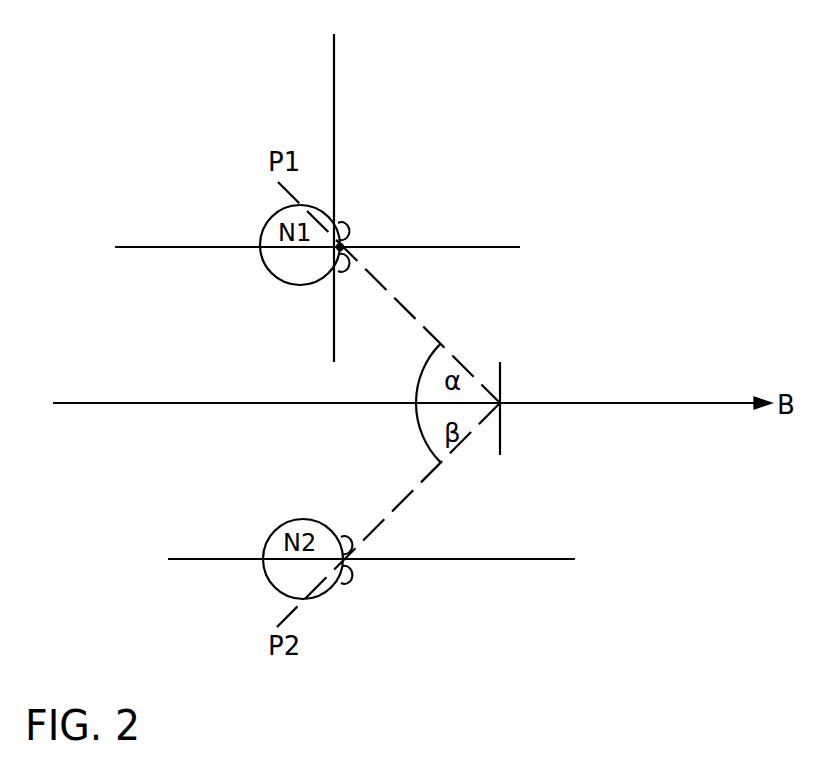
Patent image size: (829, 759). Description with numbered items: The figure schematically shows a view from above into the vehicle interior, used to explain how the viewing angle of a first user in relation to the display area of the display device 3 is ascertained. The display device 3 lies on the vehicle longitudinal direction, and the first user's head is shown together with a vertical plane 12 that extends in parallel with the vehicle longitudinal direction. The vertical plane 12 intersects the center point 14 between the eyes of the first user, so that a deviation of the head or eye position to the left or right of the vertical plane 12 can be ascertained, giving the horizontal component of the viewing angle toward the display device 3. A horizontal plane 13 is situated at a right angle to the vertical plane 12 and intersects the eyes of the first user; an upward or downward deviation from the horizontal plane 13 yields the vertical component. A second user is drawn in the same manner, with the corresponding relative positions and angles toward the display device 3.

The display device 3 is at (500, 385).
The vertical plane 12 is at (483, 247).
The horizontal plane 13 is at (334, 93).
The center point 14 is at (340, 247).